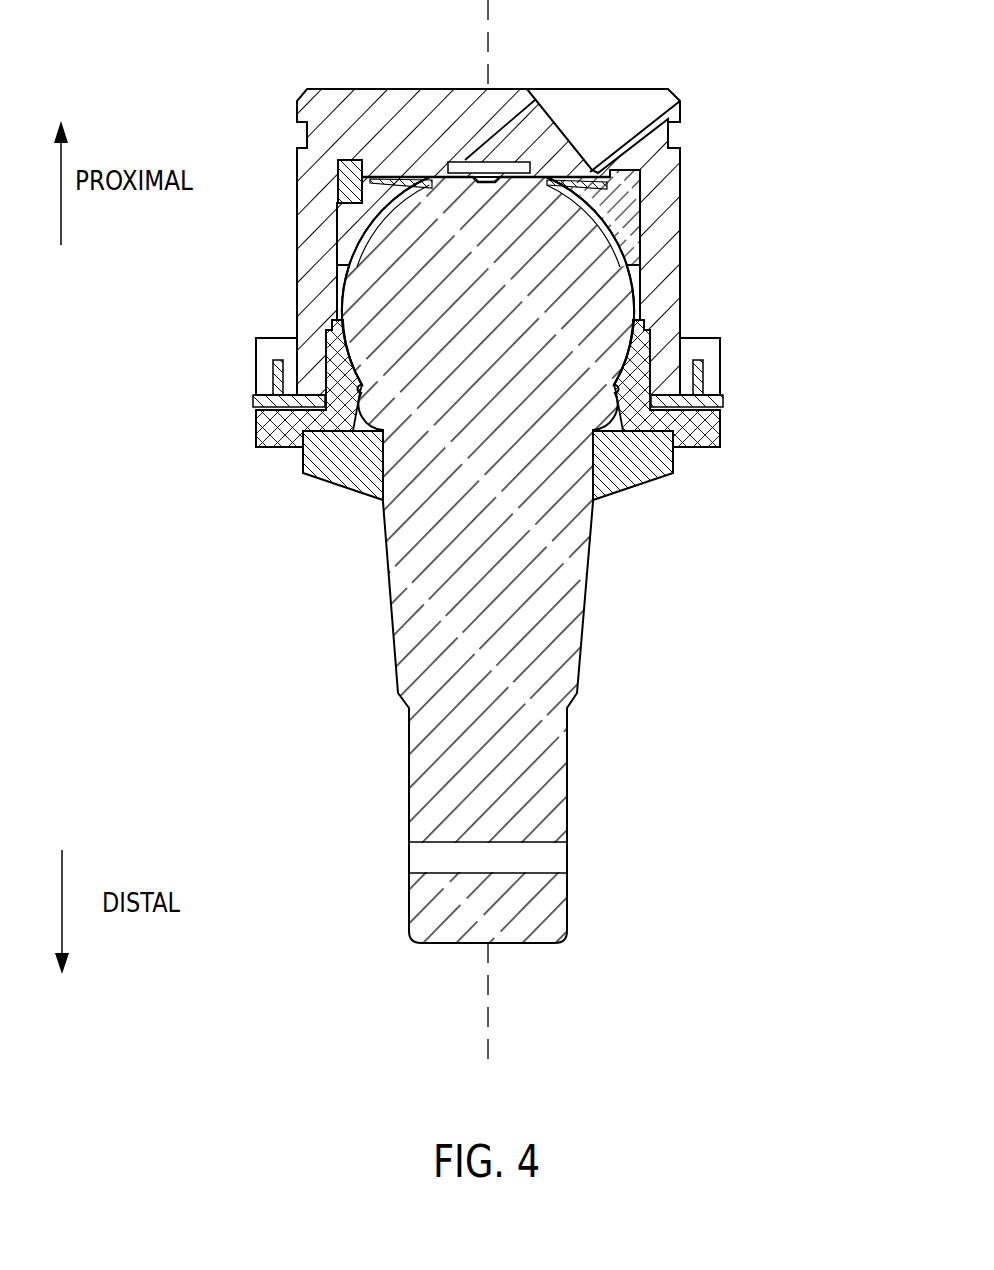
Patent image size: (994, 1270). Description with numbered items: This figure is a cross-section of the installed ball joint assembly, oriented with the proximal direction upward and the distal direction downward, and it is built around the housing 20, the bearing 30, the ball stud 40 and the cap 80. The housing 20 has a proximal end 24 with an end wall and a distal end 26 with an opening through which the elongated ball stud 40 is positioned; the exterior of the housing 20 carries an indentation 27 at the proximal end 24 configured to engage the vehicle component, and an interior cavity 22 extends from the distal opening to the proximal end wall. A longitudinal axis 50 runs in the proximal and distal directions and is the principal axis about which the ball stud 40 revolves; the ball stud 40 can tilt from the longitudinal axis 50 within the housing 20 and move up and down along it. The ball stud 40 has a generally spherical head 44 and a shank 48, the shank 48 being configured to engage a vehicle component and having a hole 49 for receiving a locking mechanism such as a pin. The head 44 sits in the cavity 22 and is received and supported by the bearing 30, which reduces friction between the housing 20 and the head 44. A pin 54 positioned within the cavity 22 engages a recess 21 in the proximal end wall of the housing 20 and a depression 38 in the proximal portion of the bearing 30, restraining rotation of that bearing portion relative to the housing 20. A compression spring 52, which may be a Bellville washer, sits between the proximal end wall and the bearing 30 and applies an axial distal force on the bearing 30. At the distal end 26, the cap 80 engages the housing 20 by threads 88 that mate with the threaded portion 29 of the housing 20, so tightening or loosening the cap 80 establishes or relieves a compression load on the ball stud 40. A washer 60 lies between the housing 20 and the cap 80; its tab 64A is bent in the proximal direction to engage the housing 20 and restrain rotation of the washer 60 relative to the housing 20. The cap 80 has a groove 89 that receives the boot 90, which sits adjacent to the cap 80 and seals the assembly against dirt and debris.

The housing 20 is at (797, 234).
The recess 21 is at (350, 160).
The interior cavity 22 is at (641, 279).
The proximal end 24 is at (692, 88).
The distal end 26 is at (213, 386).
The indentation 27 is at (672, 137).
The threaded portion 29 is at (653, 353).
The bearing 30 is at (641, 192).
The depression 38 is at (338, 222).
The ball stud 40 is at (627, 654).
The head 44 is at (410, 285).
The shank 48 is at (408, 768).
The hole 49 is at (567, 858).
The longitudinal axis 50 is at (490, 1017).
The compression spring 52 is at (424, 177).
The pin 54 is at (337, 178).
The washer 60 is at (742, 405).
The tab 64A is at (698, 373).
The cap 80 is at (742, 438).
The threads 88 is at (645, 322).
The groove 89 is at (300, 432).
The boot 90 is at (654, 500).